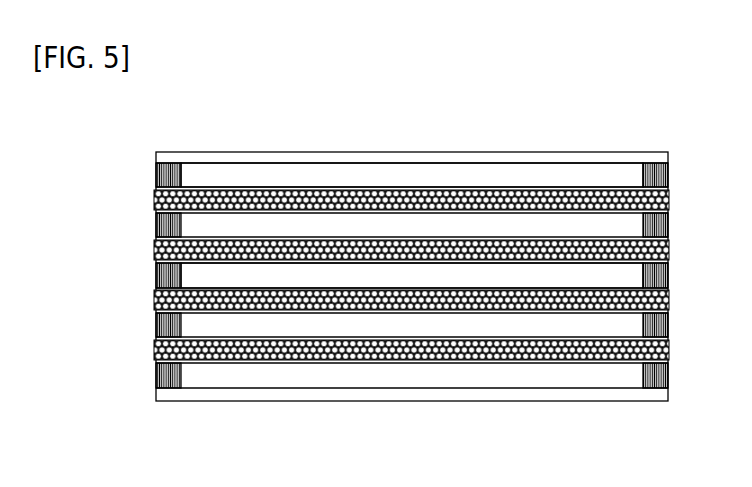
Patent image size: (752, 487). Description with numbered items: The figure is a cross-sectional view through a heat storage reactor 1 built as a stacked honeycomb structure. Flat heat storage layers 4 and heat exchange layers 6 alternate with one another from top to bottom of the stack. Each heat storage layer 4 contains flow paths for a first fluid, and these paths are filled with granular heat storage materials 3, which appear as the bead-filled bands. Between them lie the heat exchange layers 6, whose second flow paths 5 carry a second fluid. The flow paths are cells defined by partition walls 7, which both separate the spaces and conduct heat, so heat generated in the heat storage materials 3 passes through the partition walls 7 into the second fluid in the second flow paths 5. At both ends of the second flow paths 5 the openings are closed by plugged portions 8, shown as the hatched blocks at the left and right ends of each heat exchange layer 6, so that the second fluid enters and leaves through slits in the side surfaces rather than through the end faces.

The heat storage reactor 1 is at (421, 447).
The heat storage materials 3 is at (158, 347).
The heat storage layers 4 is at (673, 237).
The second flow paths 5 is at (383, 173).
The heat exchange layers 6 is at (673, 263).
The partition walls 7 is at (492, 187).
The plugged portions 8 is at (168, 225).